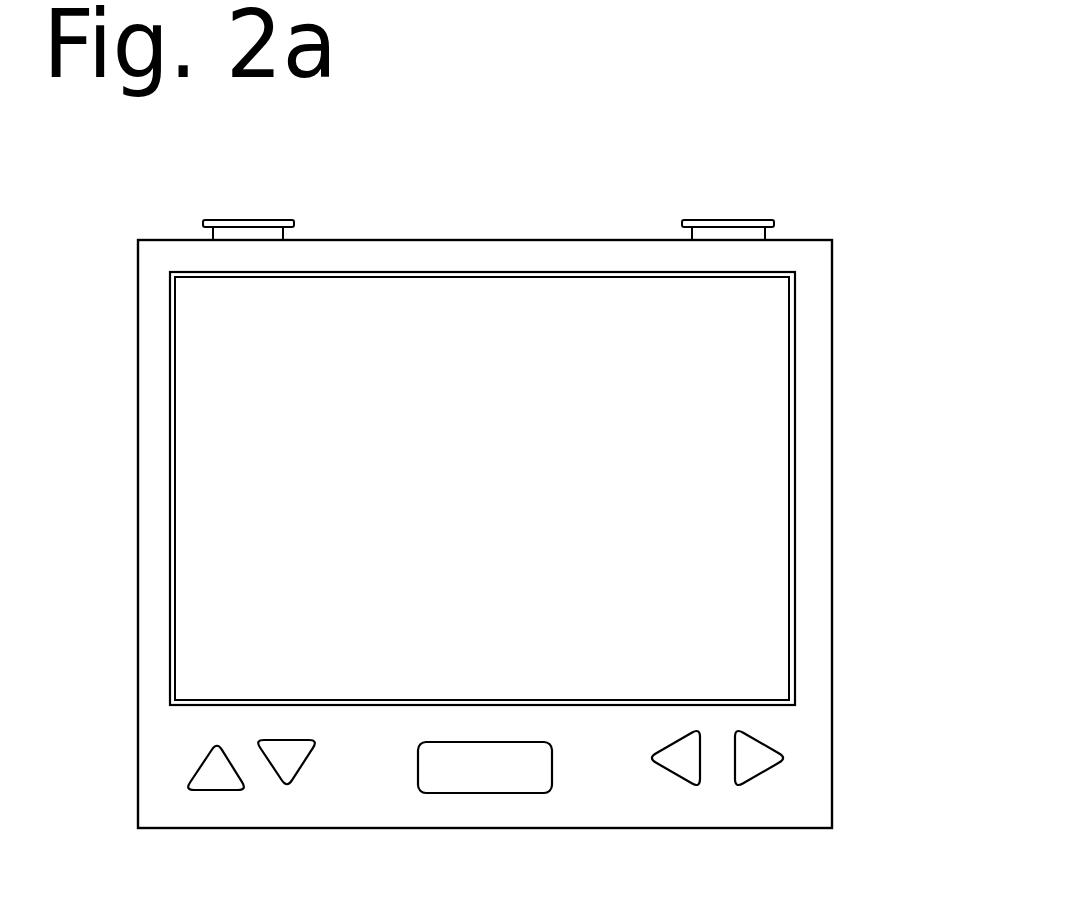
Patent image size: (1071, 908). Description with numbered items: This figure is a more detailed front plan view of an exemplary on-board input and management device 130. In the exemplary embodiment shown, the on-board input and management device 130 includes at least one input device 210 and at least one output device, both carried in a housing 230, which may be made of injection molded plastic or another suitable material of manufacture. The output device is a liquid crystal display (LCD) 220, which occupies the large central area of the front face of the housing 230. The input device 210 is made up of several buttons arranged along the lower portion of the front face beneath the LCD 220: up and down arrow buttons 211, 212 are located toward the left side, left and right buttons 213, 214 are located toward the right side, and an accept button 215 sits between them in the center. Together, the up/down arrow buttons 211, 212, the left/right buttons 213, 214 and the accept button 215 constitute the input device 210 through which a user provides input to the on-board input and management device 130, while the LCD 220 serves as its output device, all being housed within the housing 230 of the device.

The on-board input and management device 130 is at (643, 184).
The input device 210 is at (833, 755).
The liquid crystal display (LCD) 220 is at (795, 537).
The housing 230 is at (832, 388).
The up arrow button 211 is at (232, 792).
The down arrow button 212 is at (287, 792).
The left button 213 is at (667, 775).
The right button 214 is at (770, 775).
The accept button 215 is at (495, 793).